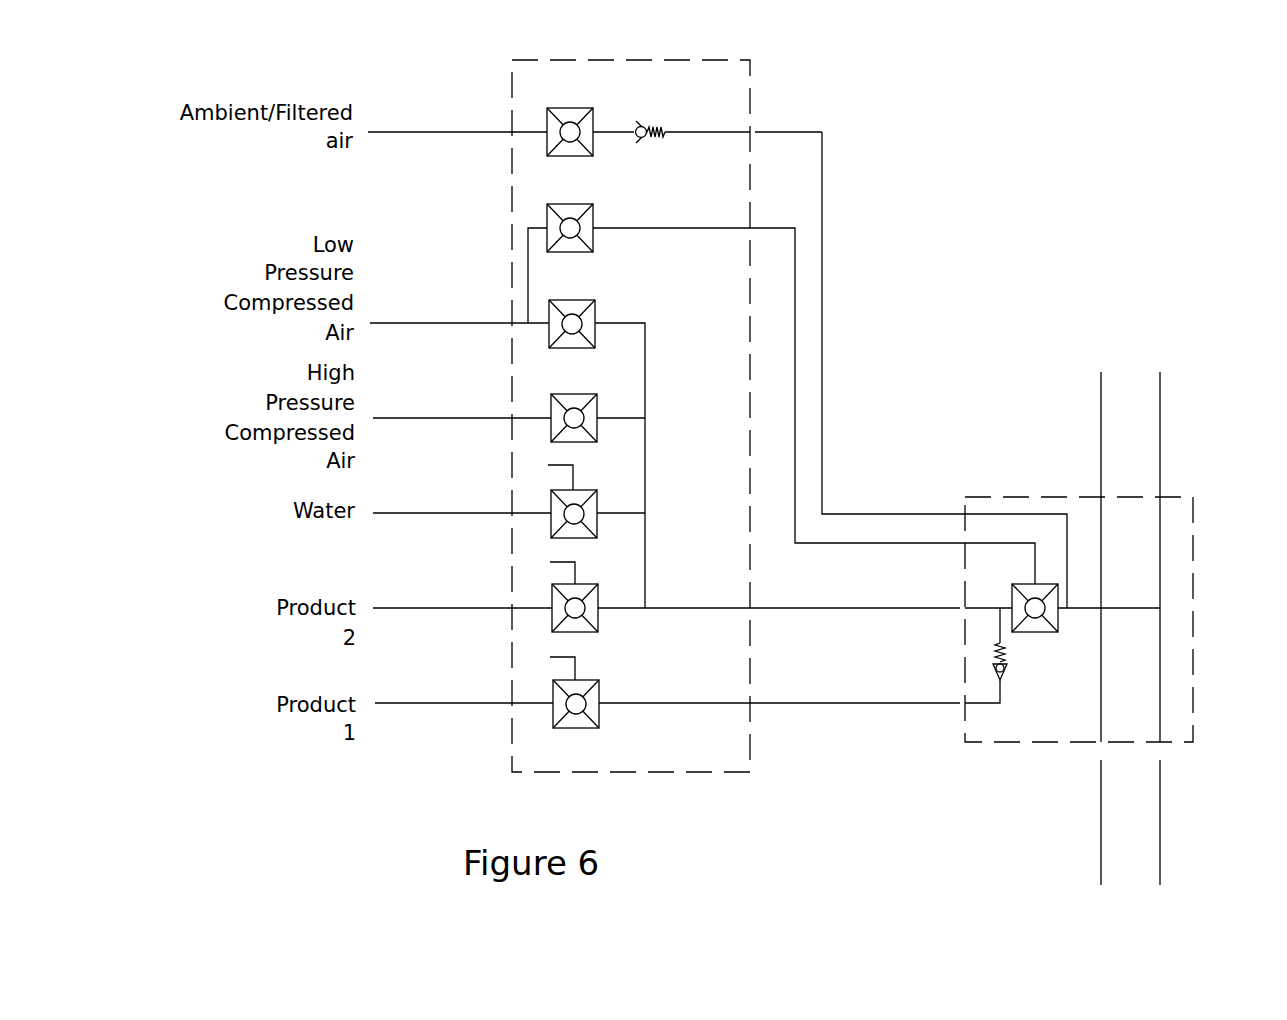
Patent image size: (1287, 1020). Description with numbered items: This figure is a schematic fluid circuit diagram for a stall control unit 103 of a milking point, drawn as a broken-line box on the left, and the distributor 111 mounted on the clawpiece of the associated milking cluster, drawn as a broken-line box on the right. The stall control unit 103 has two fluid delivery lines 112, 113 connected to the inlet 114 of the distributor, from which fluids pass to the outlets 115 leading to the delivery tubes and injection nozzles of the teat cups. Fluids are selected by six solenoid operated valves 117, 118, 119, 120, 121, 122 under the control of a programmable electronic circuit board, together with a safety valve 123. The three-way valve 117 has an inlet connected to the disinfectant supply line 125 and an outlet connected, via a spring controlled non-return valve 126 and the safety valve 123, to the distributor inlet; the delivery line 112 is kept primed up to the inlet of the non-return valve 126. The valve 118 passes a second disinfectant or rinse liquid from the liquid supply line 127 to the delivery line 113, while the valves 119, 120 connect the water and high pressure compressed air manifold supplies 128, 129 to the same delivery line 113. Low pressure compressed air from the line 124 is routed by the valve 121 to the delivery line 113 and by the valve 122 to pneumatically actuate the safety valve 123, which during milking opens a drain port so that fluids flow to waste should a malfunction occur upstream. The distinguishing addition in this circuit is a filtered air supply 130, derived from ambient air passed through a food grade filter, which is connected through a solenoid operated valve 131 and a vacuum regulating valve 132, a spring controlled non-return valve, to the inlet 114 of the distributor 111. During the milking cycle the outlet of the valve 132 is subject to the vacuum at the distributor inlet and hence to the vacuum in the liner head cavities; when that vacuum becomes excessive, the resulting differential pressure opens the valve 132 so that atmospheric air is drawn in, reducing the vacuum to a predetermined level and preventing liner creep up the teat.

The stall control unit 103 is at (748, 103).
The distributor 111 is at (1194, 529).
The delivery line 112 is at (818, 702).
The delivery line 113 is at (818, 607).
The inlet 114 is at (1094, 608).
The outlets 115 is at (1103, 493).
The three-way valve 117 is at (576, 686).
The valve 118 is at (575, 590).
The three-way valve 119 is at (574, 496).
The valve 120 is at (574, 400).
The valve 121 is at (572, 305).
The valve 122 is at (570, 210).
The safety valve 123 is at (1030, 630).
The low pressure compressed air line 124 is at (413, 321).
The disinfectant supply line 125 is at (413, 702).
The spring controlled non-return valve 126 is at (990, 659).
The liquid supply line 127 is at (413, 607).
The water manifold supply 128 is at (413, 512).
The compressed air manifold supply 129 is at (413, 417).
The filtered air supply 130 is at (410, 130).
The solenoid operated valve 131 is at (568, 113).
The vacuum regulating valve 132 is at (655, 125).